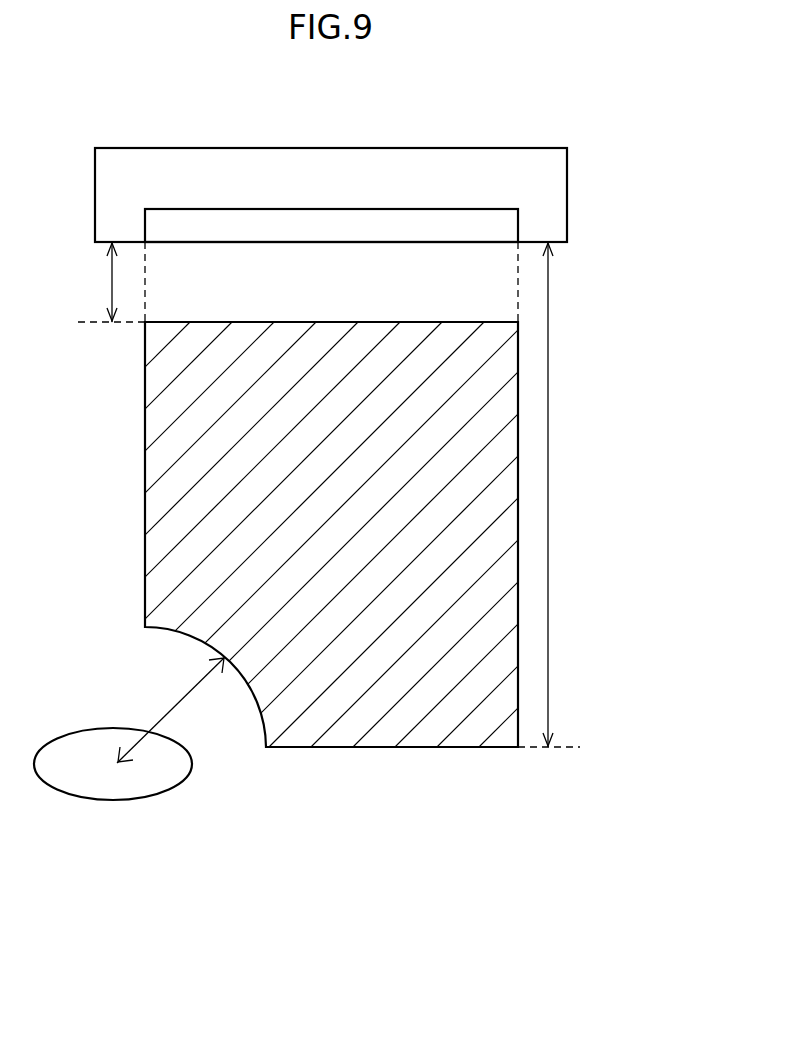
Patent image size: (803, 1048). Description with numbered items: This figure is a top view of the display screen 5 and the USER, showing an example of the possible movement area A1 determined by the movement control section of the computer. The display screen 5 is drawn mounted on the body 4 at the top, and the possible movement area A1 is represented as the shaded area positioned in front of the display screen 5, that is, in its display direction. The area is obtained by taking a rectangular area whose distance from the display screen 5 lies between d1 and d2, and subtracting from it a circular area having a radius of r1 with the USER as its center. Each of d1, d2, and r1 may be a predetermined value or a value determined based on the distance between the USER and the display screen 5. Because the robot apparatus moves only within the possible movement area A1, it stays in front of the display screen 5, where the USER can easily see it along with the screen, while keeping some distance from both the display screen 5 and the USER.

The housing / display device body 4 is at (567, 190).
The display screen 5 is at (435, 207).
The possible movement area A1 is at (145, 440).
The minimum distance d1 is at (105, 282).
The maximum distance d2 is at (562, 494).
The radius r1 is at (171, 710).
The user USER is at (108, 802).